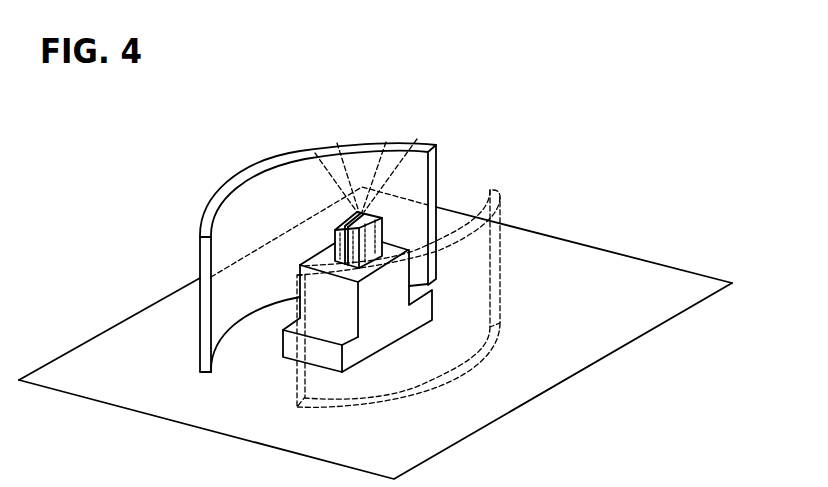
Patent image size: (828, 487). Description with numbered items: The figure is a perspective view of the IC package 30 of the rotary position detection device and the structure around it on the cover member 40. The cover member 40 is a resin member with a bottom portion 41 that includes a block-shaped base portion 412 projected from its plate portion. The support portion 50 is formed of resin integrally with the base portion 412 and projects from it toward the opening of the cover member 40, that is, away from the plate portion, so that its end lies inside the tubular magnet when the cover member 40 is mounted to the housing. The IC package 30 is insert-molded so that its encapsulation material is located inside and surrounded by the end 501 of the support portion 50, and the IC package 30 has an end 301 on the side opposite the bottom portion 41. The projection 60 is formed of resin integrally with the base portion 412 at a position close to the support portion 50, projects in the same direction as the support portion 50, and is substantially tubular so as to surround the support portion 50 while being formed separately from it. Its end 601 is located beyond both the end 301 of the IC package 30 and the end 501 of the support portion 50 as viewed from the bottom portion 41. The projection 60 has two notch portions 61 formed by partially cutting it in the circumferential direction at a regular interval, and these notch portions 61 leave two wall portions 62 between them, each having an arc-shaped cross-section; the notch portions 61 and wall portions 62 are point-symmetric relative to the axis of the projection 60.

The IC package 30 is at (337, 143).
The IC package end 301 is at (315, 153).
The cover member 40 is at (128, 397).
The bottom portion 41 is at (165, 392).
The base portion 412 is at (242, 420).
The support portion 50 is at (372, 227).
The end of the support portion 501 is at (362, 212).
The projection 60 is at (355, 247).
The projection end 601 is at (248, 177).
The notch portion 61 is at (208, 298).
The wall portion 62 is at (220, 203).